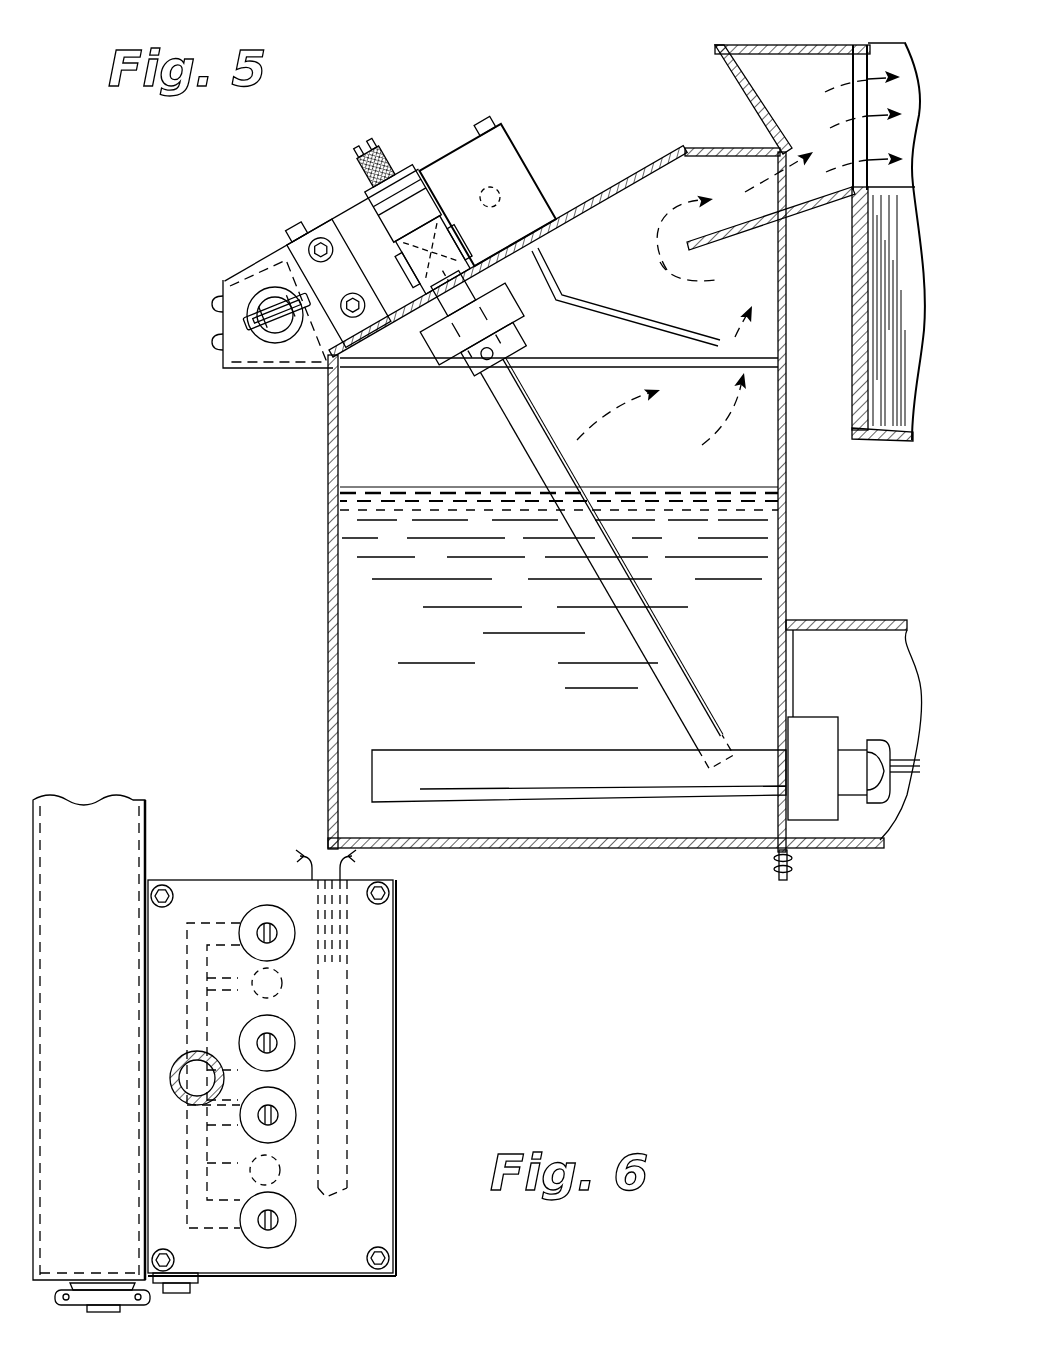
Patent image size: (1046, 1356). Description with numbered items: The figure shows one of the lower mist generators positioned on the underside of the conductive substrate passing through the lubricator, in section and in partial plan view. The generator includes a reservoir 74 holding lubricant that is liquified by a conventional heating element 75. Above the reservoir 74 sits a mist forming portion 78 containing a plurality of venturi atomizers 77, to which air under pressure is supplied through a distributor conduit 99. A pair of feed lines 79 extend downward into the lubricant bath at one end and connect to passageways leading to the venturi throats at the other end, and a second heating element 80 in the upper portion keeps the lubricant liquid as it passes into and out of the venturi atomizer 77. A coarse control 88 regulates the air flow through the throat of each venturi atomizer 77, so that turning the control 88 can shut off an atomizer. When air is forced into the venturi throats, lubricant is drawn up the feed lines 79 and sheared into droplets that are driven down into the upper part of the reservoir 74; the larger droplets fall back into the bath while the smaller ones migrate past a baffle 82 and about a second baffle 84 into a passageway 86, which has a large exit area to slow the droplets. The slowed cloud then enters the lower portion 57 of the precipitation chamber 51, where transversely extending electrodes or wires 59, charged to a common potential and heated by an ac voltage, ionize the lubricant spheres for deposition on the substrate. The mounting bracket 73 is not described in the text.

In FIG. 5, the precipitation chamber 51 is at (886, 447).
In FIG. 5, the lower portion 57 is at (854, 350).
In FIG. 5, the electrodes or wires 59 is at (905, 315).
In FIG. 5, the mounting bracket 73 is at (313, 373).
In FIG. 5, the reservoir 74 is at (330, 627).
In FIG. 5, the heating element 75 is at (472, 750).
In FIG. 5, the venturi atomizers 77 is at (422, 168).
In FIG. 6, the venturi atomizers 77 is at (268, 905).
In FIG. 5, the mist forming portion 78 is at (527, 163).
In FIG. 6, the mist forming portion 78 is at (396, 1008).
In FIG. 5, the feed lines 79 is at (678, 660).
In FIG. 6, the feed lines 79 is at (283, 1000).
In FIG. 5, the second heating element 80 is at (505, 178).
In FIG. 6, the second heating element 80 is at (352, 1092).
In FIG. 5, the baffle 82 is at (634, 312).
In FIG. 5, the second baffle 84 is at (700, 246).
In FIG. 5, the passageway 86 is at (790, 73).
In FIG. 5, the coarse control 88 is at (387, 152).
In FIG. 6, the coarse control 88 is at (275, 1141).
In FIG. 6, the distributor conduit 99 is at (178, 1066).